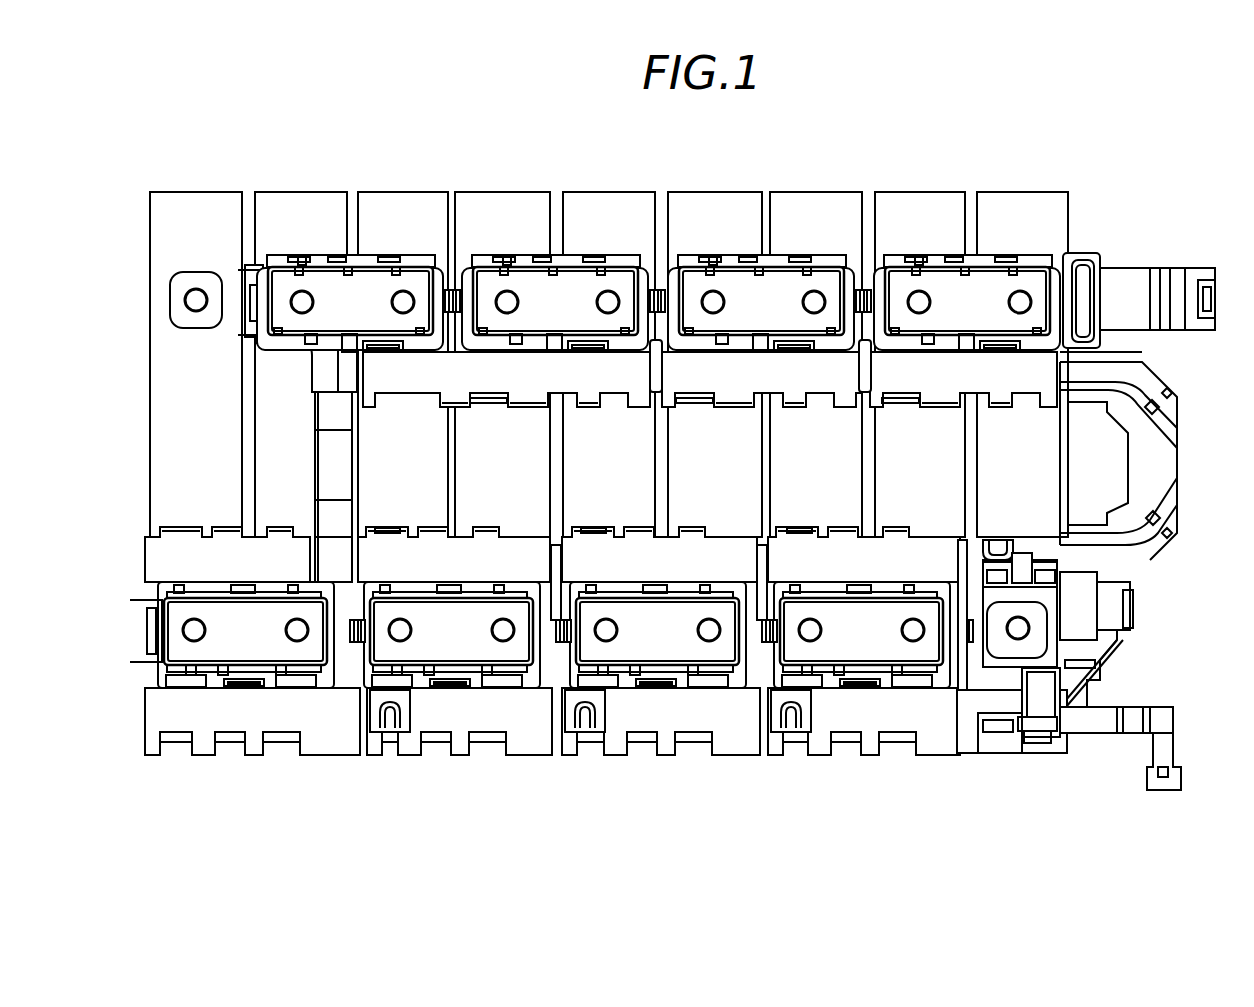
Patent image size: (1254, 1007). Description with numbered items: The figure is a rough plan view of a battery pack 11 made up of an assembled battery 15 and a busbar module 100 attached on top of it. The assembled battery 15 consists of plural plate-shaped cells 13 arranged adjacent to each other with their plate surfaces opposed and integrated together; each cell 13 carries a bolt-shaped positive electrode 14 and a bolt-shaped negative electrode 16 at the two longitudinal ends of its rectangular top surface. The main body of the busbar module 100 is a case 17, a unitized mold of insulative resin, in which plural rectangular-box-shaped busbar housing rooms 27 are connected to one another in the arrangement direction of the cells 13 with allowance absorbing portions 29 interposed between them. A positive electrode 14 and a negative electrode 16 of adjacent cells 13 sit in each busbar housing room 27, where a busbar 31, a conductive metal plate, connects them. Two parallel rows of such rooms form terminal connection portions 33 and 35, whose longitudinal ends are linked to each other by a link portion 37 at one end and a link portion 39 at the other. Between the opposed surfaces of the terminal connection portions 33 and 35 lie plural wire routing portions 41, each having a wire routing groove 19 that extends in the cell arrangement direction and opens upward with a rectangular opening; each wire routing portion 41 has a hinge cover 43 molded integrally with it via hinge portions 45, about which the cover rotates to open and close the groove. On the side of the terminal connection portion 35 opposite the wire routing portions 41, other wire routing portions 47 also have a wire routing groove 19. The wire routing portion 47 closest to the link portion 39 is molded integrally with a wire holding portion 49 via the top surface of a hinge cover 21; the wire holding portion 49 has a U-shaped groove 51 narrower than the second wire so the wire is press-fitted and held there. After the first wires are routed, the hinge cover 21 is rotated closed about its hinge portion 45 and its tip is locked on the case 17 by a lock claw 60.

The battery pack 11 is at (216, 172).
The cell 13 is at (178, 382).
The positive electrode 14 is at (190, 300).
The assembled battery 15 is at (146, 274).
The negative electrode 16 is at (303, 300).
The case 17 is at (1097, 254).
The wire routing groove 19 is at (992, 546).
The hinge cover 21 is at (970, 722).
The busbar housing room 27 is at (396, 262).
The allowance absorbing portion 29 is at (453, 290).
The busbar 31 is at (362, 287).
The terminal connection portion 33 is at (246, 298).
The terminal connection portion 35 is at (140, 628).
The link portion 37 is at (290, 400).
The link portion 39 is at (1178, 490).
The wire routing portion 41 is at (535, 372).
The hinge cover 43 is at (534, 386).
The hinge portion 45 is at (640, 410).
The wire routing portion 47 is at (333, 737).
The wire holding portion 49 is at (1072, 718).
The U-shaped groove 51 is at (1043, 727).
The lock claw 60 is at (392, 343).
The busbar module 100 is at (1172, 380).